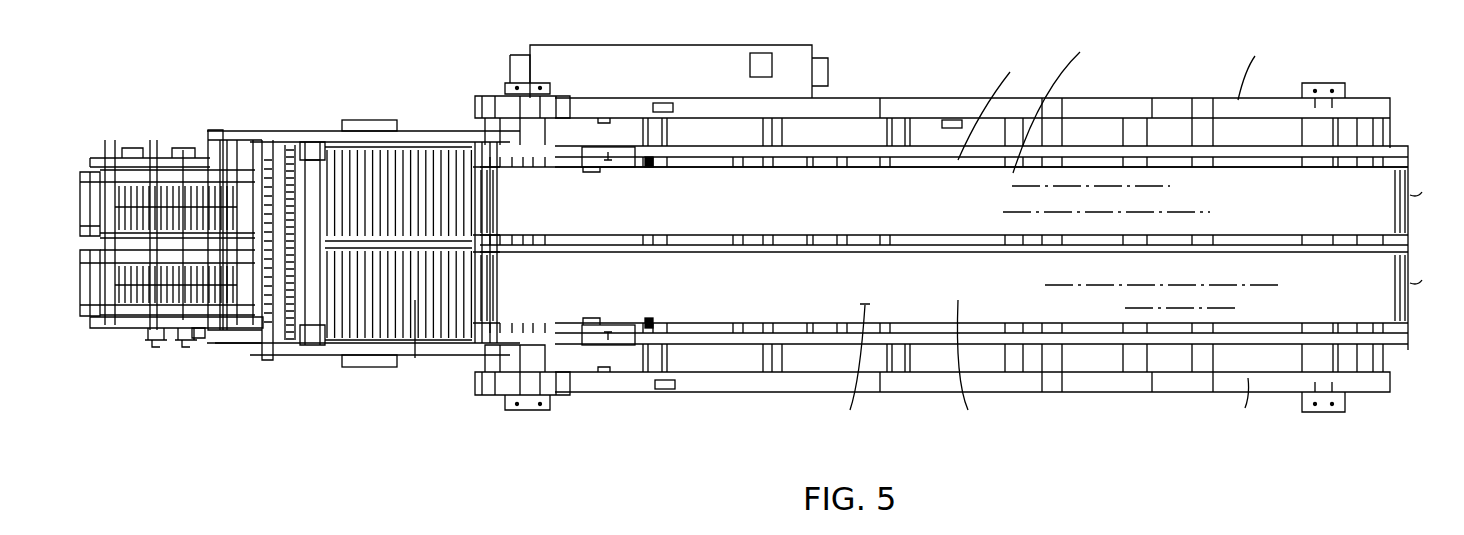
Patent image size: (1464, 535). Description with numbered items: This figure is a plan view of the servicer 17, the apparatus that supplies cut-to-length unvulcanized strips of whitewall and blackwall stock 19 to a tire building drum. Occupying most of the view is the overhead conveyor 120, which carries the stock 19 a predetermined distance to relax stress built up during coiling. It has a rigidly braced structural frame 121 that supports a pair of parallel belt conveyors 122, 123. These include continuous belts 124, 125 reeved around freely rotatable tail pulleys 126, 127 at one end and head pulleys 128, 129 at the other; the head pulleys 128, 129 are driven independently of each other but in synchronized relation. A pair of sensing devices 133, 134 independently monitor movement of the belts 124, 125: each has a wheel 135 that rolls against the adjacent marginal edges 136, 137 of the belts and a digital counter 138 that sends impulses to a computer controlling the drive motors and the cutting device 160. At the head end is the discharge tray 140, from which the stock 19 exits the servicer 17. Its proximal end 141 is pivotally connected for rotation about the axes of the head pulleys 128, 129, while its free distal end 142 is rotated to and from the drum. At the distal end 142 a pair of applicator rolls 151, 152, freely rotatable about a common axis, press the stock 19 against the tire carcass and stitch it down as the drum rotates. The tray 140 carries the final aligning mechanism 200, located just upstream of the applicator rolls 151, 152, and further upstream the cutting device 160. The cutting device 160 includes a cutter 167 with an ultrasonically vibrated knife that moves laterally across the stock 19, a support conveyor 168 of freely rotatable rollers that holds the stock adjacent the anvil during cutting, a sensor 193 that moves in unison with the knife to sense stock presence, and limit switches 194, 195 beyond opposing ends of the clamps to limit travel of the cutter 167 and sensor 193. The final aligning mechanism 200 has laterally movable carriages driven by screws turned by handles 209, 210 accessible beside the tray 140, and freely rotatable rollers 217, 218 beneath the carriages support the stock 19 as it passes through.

The servicer 17 is at (936, 90).
The whitewall and blackwall stock 19 is at (1093, 208).
The overhead conveyor 120 is at (1088, 140).
The structural frame 121 is at (1240, 230).
The belt conveyor 122 is at (1001, 105).
The belt conveyor 123 is at (981, 363).
The continuous belt 124 is at (1060, 101).
The continuous belt 125 is at (866, 365).
The tail pulley 126 is at (1432, 184).
The tail pulley 127 is at (1432, 272).
The head pulley 128 is at (493, 191).
The head pulley 129 is at (490, 290).
The sensing device 133 is at (633, 167).
The sensing device 134 is at (628, 326).
The wheel 135 is at (586, 172).
The marginal edge 136 is at (733, 167).
The marginal edge 137 is at (731, 235).
The digital counter 138 is at (618, 168).
The discharge tray 140 is at (423, 126).
The proximal end 141 is at (484, 119).
The distal end 142 is at (86, 320).
The applicator roll 151 is at (88, 278).
The applicator roll 152 is at (84, 190).
The cutting device 160 is at (291, 124).
The cutter 167 is at (268, 358).
The conveyor 168 is at (415, 358).
The sensor 193 is at (335, 358).
The limit switch 194 is at (310, 360).
The limit switch 195 is at (305, 135).
The final aligning mechanism 200 is at (166, 151).
The handle 209 is at (150, 347).
The handle 210 is at (180, 347).
The roller 217 is at (198, 338).
The roller 218 is at (185, 195).